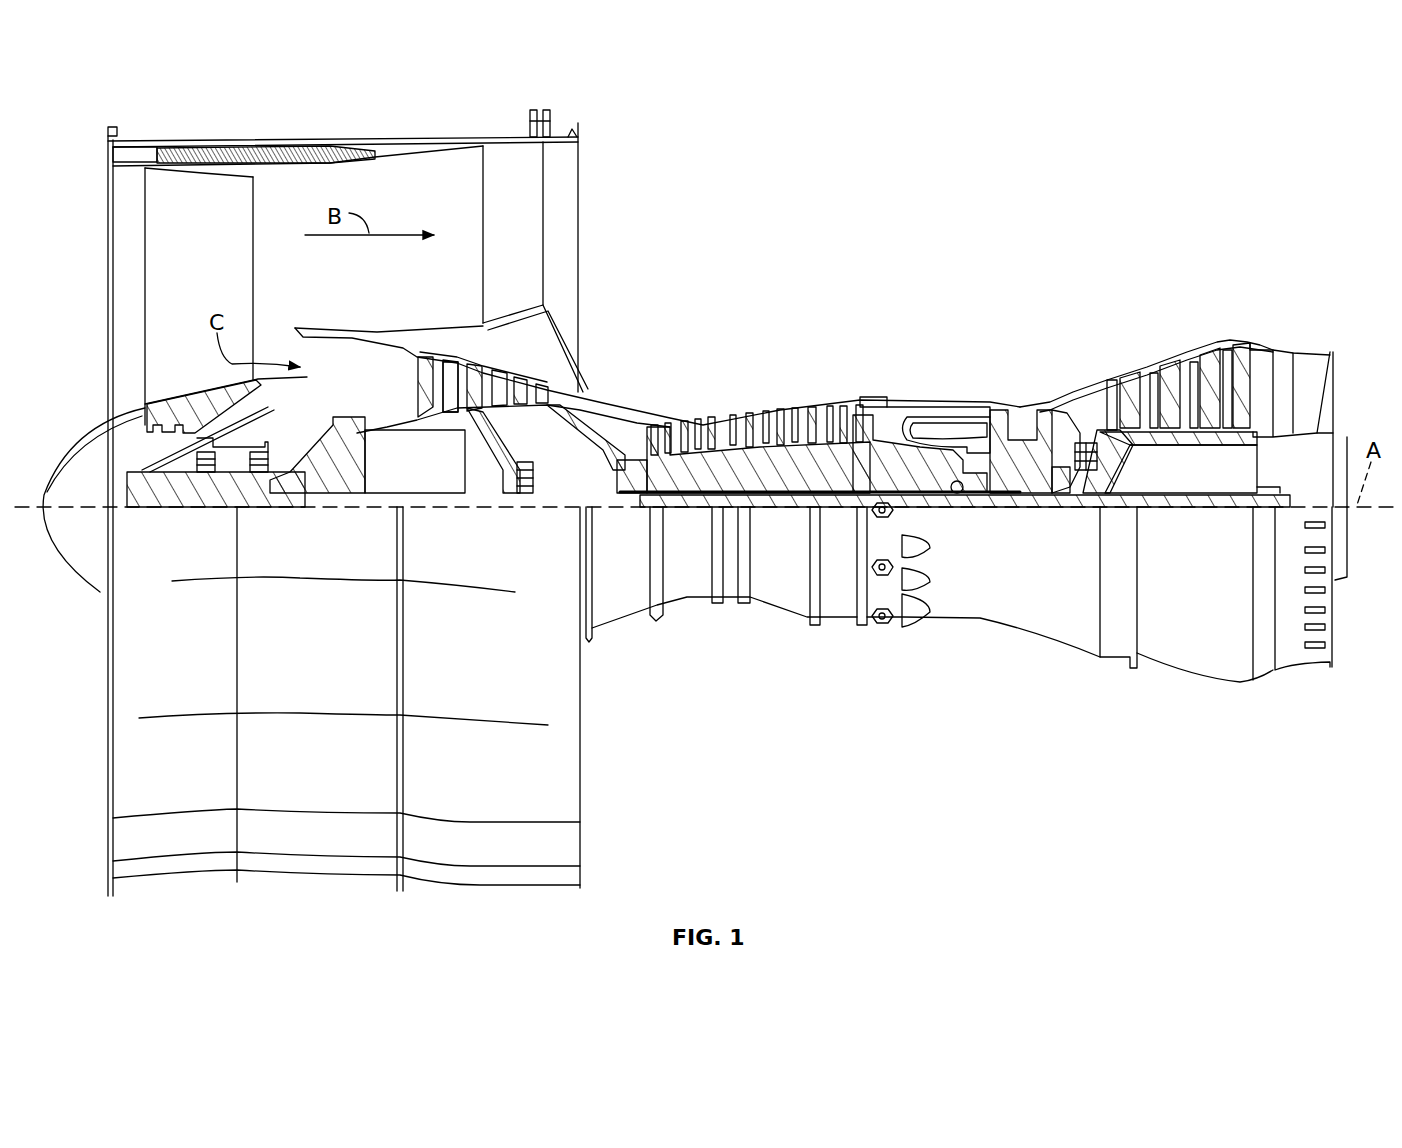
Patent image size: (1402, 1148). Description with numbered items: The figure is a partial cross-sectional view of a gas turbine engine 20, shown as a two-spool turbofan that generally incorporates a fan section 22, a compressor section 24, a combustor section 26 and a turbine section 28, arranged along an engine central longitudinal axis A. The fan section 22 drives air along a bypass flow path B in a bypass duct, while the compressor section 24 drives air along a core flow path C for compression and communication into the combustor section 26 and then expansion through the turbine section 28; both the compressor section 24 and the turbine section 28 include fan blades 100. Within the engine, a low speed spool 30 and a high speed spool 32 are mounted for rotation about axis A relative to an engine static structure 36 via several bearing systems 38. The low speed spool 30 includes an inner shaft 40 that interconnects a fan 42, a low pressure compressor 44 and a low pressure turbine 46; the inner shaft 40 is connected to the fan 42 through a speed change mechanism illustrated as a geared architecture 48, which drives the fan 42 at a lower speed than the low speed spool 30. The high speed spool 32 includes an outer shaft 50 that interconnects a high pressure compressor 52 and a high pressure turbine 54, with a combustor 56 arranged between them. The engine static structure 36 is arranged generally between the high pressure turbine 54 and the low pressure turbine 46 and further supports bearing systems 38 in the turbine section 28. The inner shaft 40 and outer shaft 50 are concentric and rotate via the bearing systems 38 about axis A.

The gas turbine engine 20 is at (1155, 175).
The fan section 22 is at (214, 131).
The compressor section 24 is at (770, 362).
The combustor section 26 is at (935, 360).
The turbine section 28 is at (1083, 347).
The low speed spool 30 is at (807, 512).
The high speed spool 32 is at (860, 423).
The engine static structure 36 is at (842, 626).
The bearing systems 38 is at (210, 467).
The inner shaft 40 is at (595, 508).
The fan 42 is at (225, 269).
The low pressure compressor 44 is at (493, 380).
The low pressure turbine 46 is at (1190, 363).
The geared architecture 48 is at (347, 473).
The outer shaft 50 is at (967, 495).
The high pressure compressor 52 is at (760, 470).
The high pressure turbine 54 is at (1017, 403).
The combustor 56 is at (947, 417).
The fan blades 100 is at (427, 375).